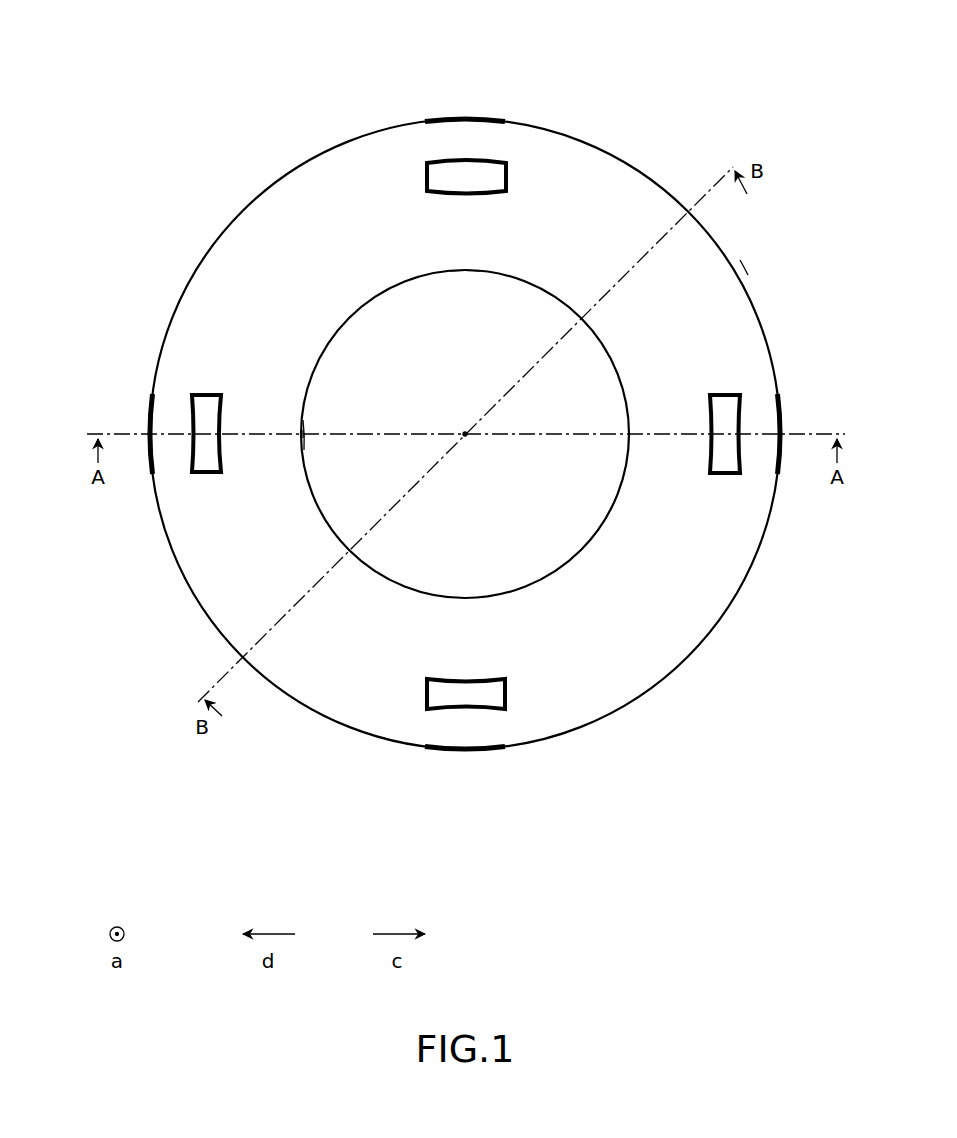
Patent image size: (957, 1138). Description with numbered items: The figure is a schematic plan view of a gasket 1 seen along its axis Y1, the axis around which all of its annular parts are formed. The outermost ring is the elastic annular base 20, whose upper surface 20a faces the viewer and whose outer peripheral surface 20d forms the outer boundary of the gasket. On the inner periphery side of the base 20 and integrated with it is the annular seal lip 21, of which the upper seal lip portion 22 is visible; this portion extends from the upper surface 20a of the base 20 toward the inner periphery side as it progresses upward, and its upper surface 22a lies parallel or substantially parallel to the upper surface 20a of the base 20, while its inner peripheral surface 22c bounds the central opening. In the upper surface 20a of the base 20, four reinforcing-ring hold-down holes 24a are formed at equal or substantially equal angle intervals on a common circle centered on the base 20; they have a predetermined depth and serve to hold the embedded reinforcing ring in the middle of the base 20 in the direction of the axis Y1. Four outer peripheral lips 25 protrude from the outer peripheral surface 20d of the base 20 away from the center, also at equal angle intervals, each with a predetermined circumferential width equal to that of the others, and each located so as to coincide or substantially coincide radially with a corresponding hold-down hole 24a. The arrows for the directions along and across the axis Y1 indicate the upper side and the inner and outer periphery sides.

The gasket 1 is at (459, 428).
The base 20 is at (220, 274).
The upper surface 20a is at (572, 182).
The outer peripheral surface 20d is at (746, 268).
The seal lip 21 is at (312, 455).
The upper seal lip portion 22 is at (358, 282).
The upper surface 22a is at (470, 232).
The inner peripheral surface 22c is at (315, 373).
The reinforcing-ring hold-down hole 24a is at (490, 172).
The outer peripheral lip 25 is at (472, 118).
The axis Y1 is at (467, 433).